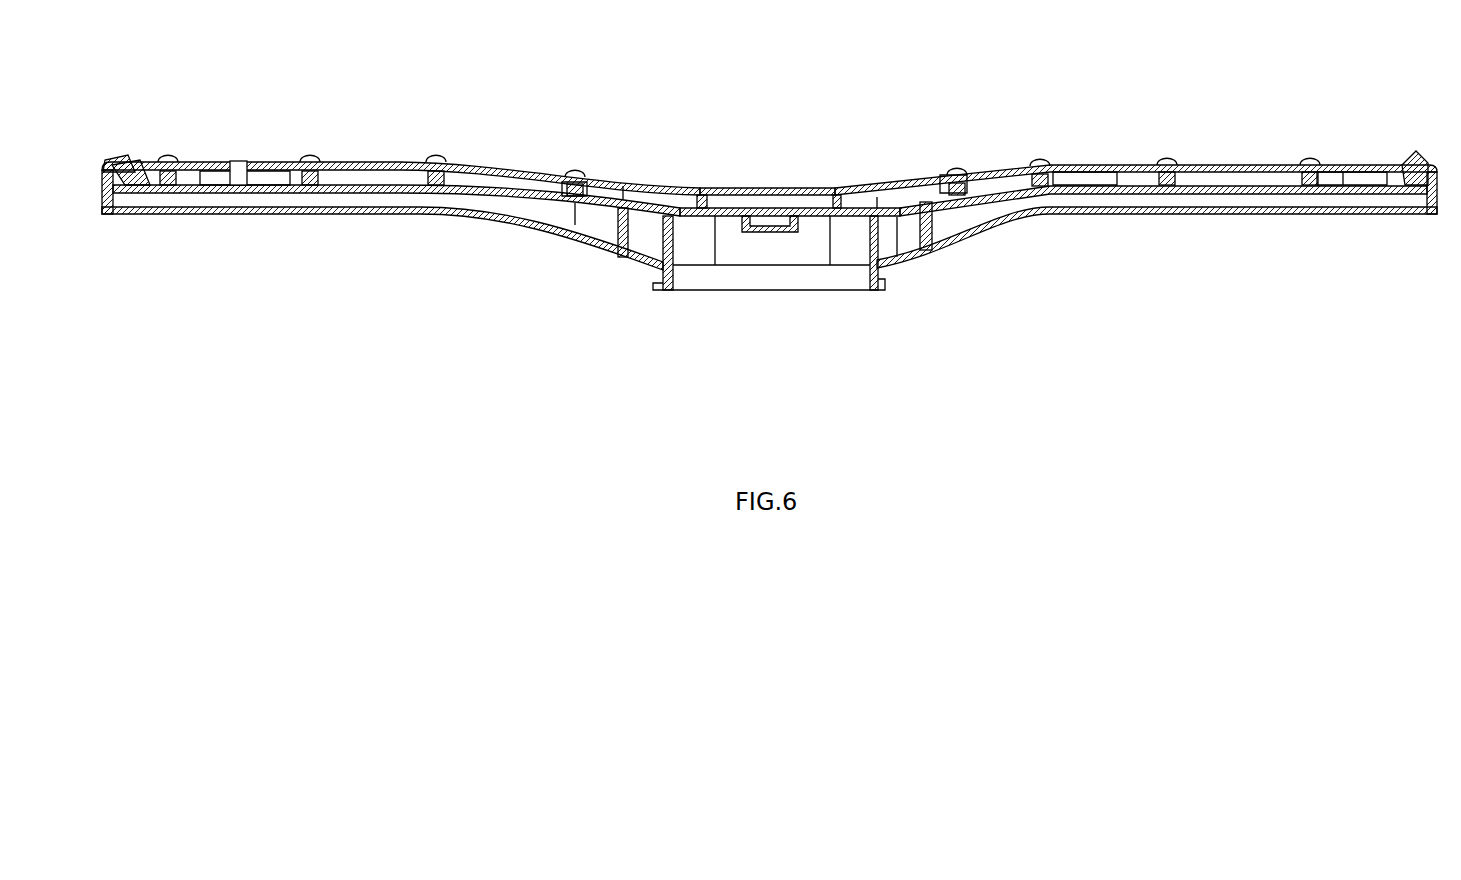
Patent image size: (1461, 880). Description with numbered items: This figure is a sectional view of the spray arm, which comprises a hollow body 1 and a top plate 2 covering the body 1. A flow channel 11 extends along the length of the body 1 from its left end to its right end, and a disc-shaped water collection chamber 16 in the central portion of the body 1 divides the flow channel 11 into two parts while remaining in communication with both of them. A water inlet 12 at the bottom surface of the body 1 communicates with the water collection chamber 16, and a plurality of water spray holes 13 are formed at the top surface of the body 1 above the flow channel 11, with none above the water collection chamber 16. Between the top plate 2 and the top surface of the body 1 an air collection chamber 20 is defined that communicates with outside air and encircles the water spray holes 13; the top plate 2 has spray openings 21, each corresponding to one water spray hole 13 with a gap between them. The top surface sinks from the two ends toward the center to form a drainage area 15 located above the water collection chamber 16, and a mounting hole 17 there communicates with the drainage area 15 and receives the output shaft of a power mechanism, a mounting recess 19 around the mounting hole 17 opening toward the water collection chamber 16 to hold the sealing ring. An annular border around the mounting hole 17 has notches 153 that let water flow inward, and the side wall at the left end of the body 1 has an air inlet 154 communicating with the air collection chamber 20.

The body 1 is at (1102, 215).
The top plate 2 is at (898, 192).
The flow channel 11 is at (350, 207).
The water inlet 12 is at (851, 273).
The water spray holes 13 is at (240, 195).
The drainage area 15 is at (821, 193).
The water collection chamber 16 is at (741, 251).
The mounting hole 17 is at (765, 200).
The mounting recess 19 is at (795, 220).
The air collection chamber 20 is at (272, 171).
The spray openings 21 is at (240, 162).
The notches 153 is at (683, 186).
The air inlet 154 is at (95, 162).